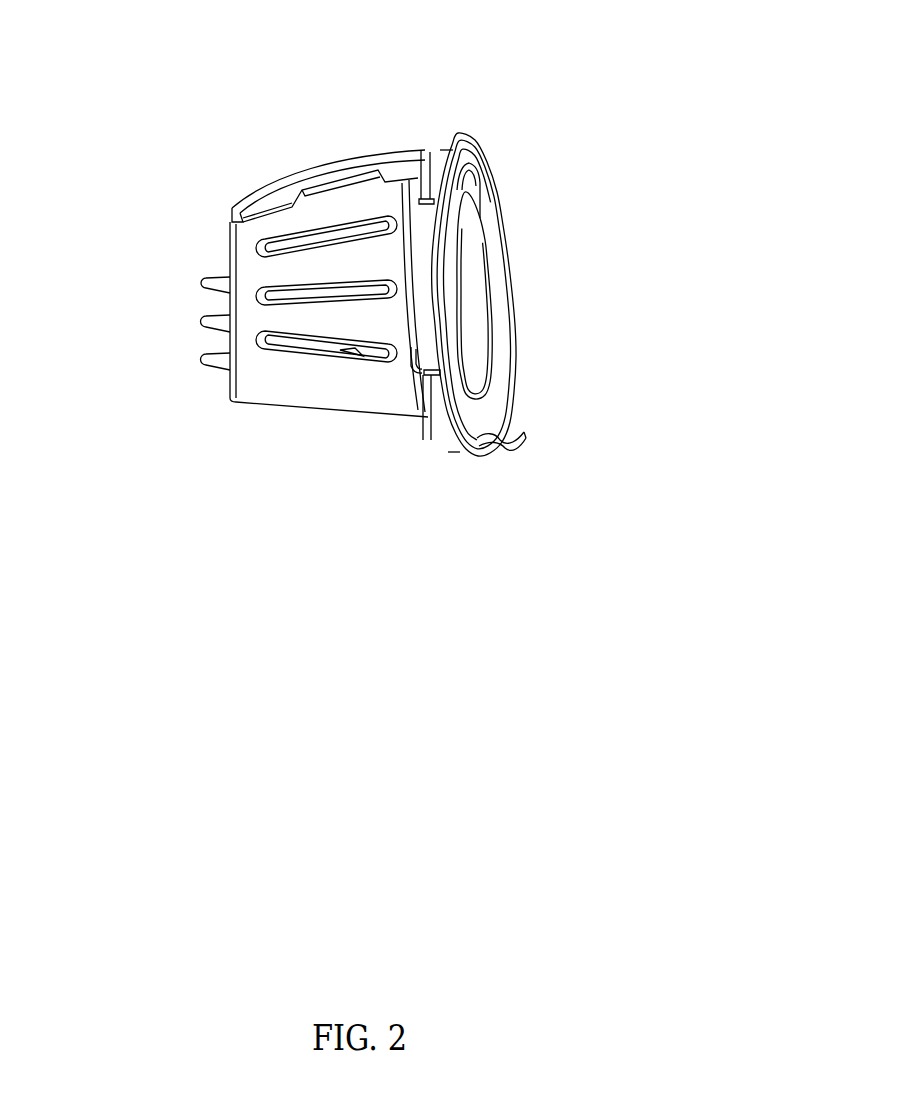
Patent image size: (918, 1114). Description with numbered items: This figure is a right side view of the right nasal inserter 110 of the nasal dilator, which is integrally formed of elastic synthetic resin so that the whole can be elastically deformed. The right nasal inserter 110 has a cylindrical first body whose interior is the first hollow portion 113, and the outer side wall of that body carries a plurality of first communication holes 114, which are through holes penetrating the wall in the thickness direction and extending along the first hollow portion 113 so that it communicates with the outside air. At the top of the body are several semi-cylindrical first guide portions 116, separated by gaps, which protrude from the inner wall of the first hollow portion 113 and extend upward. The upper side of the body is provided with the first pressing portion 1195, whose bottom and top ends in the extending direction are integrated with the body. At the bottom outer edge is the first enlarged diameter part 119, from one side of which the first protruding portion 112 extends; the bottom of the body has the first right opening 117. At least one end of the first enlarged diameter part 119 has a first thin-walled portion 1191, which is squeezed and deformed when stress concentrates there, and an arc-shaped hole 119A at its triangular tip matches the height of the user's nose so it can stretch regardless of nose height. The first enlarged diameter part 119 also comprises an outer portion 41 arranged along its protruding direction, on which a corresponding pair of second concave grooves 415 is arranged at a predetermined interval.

The right nasal inserter 110 is at (522, 112).
The first protruding portion 112 is at (510, 452).
The first hollow portion 113 is at (475, 298).
The first communication holes 114 is at (343, 226).
The first guide portions 116 is at (206, 284).
The first right opening 117 is at (492, 367).
The first enlarged diameter part 119 is at (490, 237).
The arc-shaped hole 119A is at (478, 150).
The first thin-walled portion 1191 is at (428, 150).
The first pressing portion 1195 is at (260, 207).
The outer portion 41 is at (427, 338).
The second concave grooves 415 is at (447, 150).